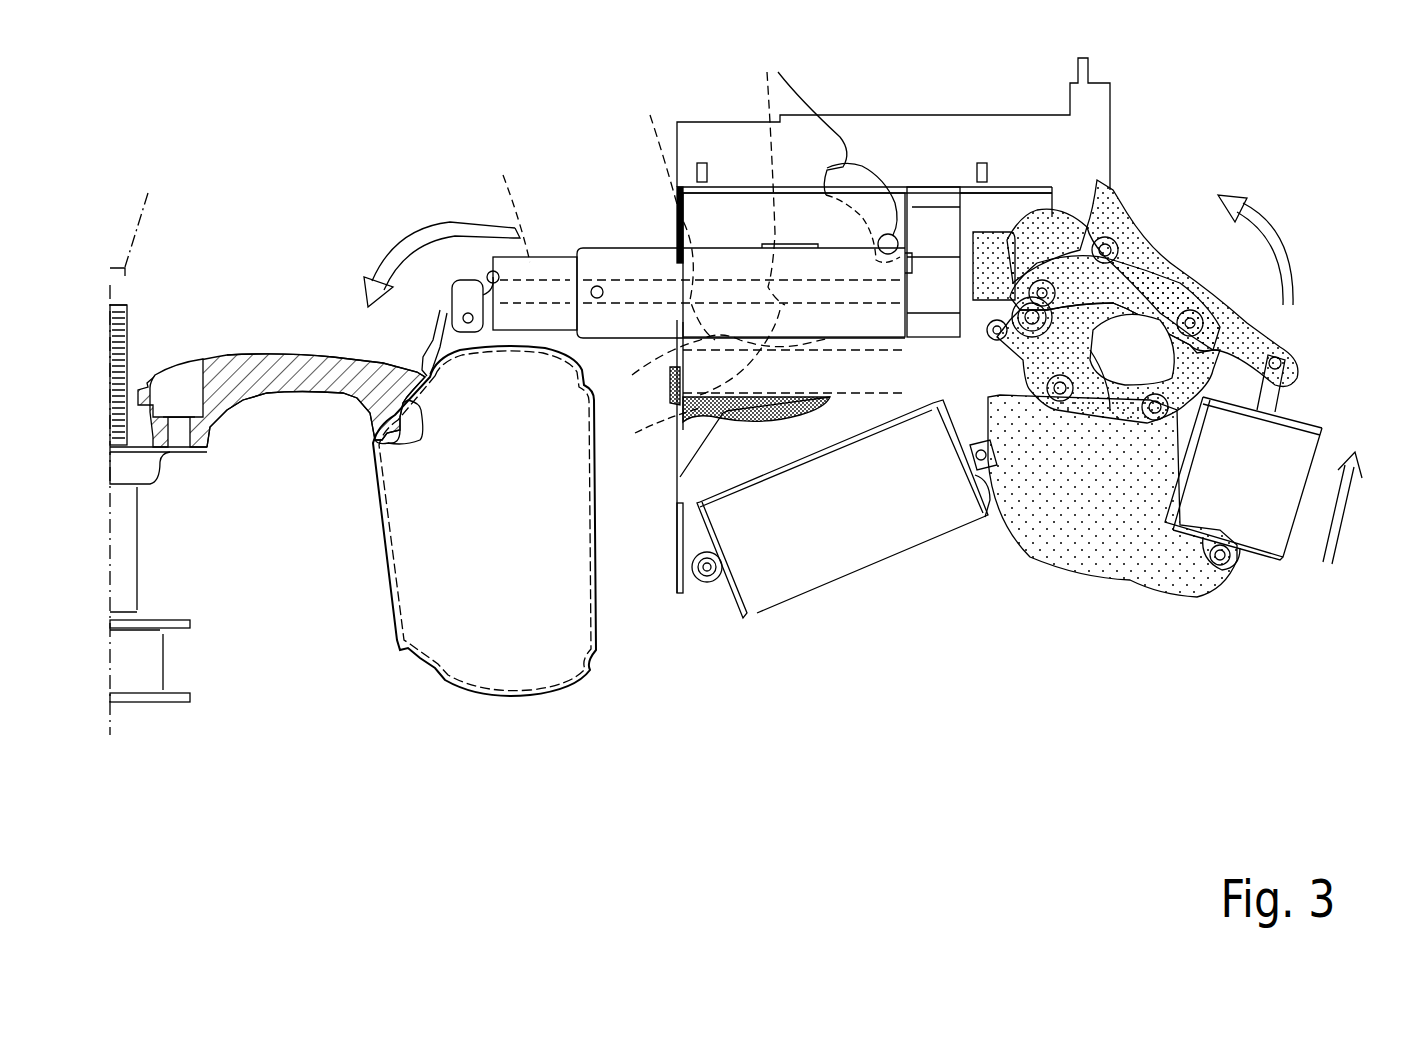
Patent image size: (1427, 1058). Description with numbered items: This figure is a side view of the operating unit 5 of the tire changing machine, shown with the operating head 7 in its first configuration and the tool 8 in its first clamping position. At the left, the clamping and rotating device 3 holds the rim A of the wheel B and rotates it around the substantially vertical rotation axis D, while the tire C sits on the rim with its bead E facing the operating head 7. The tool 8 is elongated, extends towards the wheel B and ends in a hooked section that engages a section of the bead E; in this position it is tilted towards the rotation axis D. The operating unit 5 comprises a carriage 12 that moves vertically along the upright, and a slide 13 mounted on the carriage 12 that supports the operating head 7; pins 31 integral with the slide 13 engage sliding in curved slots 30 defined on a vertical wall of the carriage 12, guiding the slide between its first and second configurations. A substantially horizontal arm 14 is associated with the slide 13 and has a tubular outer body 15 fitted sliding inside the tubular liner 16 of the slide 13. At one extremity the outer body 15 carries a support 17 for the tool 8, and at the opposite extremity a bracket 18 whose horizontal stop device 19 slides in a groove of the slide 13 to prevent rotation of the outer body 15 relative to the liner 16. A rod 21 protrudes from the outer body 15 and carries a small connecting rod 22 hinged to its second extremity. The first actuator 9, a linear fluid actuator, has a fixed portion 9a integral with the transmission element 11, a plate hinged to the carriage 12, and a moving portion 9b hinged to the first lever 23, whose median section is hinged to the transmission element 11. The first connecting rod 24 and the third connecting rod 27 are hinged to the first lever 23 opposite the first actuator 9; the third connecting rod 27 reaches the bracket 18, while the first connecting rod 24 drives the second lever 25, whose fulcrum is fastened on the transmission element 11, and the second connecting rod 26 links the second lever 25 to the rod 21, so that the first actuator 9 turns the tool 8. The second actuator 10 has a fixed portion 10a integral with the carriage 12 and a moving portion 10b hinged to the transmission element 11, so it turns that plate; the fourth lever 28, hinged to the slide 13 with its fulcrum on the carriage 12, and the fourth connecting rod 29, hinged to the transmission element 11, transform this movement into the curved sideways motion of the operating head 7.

The clamping and rotating device 3 is at (140, 530).
The operating unit 5 is at (1237, 128).
The operating head 7 is at (440, 320).
The tool 8 is at (425, 352).
The first actuator 9 is at (1289, 488).
The fixed portion 9a is at (1265, 520).
The moving portion 9b is at (1270, 395).
The second actuator 10 is at (842, 555).
The fixed portion 10a is at (750, 555).
The moving portion 10b is at (990, 515).
The transmission element 11 is at (1178, 565).
The carriage 12 is at (868, 135).
The slide 13 is at (737, 185).
The arm 14 is at (555, 250).
The outer body 15 is at (532, 270).
The tubular liner 16 is at (630, 255).
The support 17 is at (458, 280).
The bracket 18 is at (995, 240).
The stop device 19 is at (945, 200).
The rod 21 is at (675, 212).
The small connecting rod 22 is at (509, 203).
The first lever 23 is at (1270, 327).
The first connecting rod 24 is at (1018, 400).
The second lever 25 is at (1105, 400).
The second connecting rod 26 is at (1140, 285).
The third connecting rod 27 is at (1060, 220).
The fourth lever 28 is at (712, 352).
The fourth connecting rod 29 is at (730, 400).
The curved slots 30 is at (826, 172).
The pins 31 is at (890, 234).
The rim A is at (218, 368).
The wheel B is at (280, 353).
The tire C is at (455, 670).
The rotation axis D is at (135, 451).
The bead E is at (380, 440).